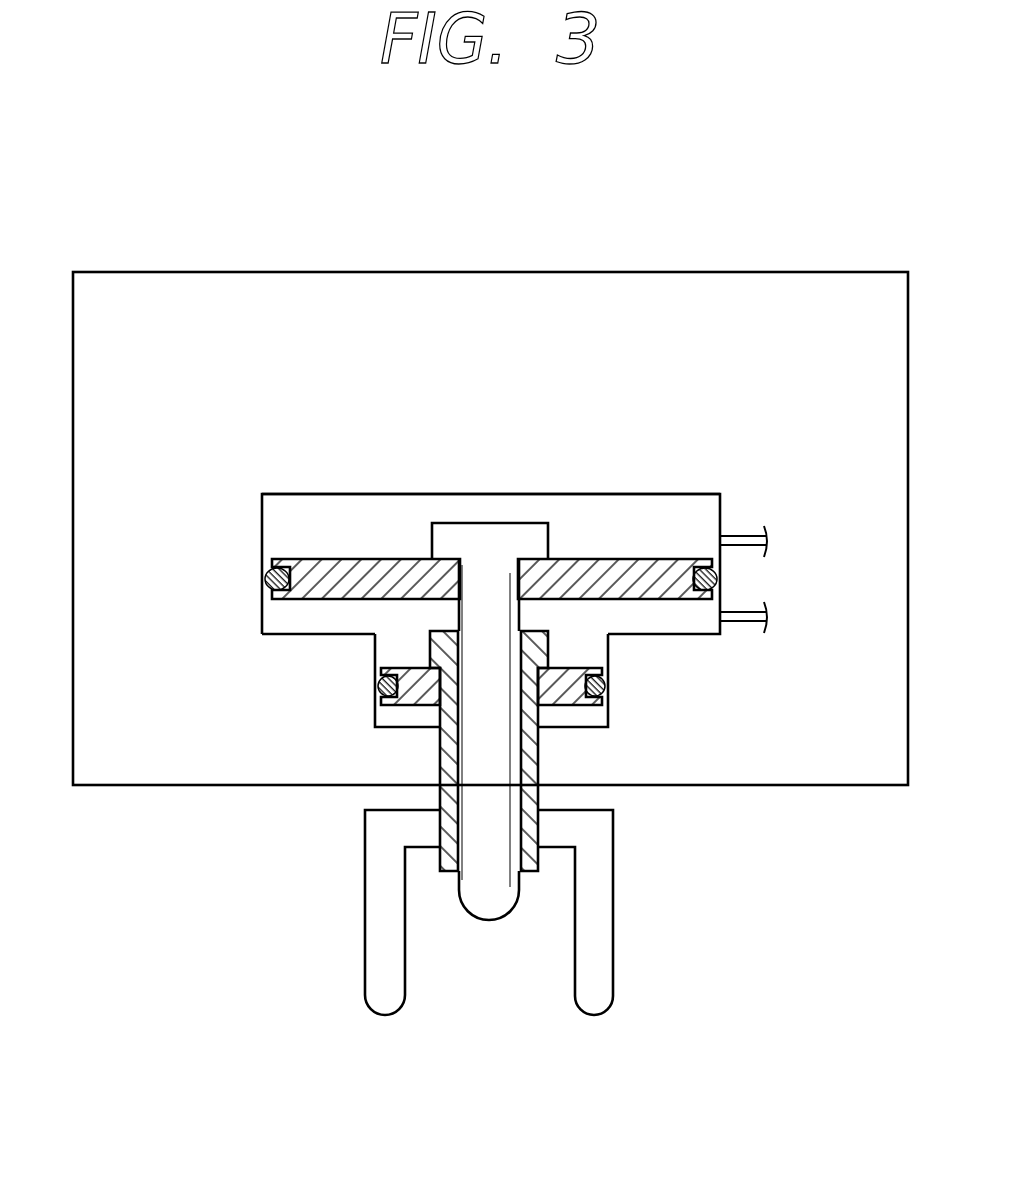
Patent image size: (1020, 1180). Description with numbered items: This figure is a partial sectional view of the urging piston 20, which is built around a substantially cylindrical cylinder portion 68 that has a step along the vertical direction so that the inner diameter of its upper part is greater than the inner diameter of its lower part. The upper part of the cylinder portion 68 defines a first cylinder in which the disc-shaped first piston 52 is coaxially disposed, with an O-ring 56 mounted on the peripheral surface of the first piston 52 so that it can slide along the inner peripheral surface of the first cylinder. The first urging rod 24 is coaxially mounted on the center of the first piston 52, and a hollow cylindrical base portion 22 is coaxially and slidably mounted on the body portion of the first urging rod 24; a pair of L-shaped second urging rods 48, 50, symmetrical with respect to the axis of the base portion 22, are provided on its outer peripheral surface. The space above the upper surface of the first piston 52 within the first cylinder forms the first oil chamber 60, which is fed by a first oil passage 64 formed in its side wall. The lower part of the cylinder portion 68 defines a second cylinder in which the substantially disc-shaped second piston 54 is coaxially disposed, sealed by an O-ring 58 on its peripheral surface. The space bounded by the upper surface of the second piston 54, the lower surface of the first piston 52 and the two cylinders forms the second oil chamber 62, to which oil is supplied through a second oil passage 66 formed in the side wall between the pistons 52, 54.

The urging piston 20 is at (735, 256).
The base portion 22 is at (532, 803).
The first urging rod 24 is at (495, 912).
The second urging rod 48 is at (373, 1008).
The second urging rod 50 is at (595, 1010).
The first piston 52 is at (328, 565).
The second piston 54 is at (405, 698).
The O-ring 56 is at (265, 585).
The O-ring 58 is at (373, 683).
The first oil chamber 60 is at (682, 502).
The second oil chamber 62 is at (637, 628).
The first oil passage 64 is at (743, 537).
The second oil passage 66 is at (743, 610).
The cylinder portion 68 is at (466, 495).